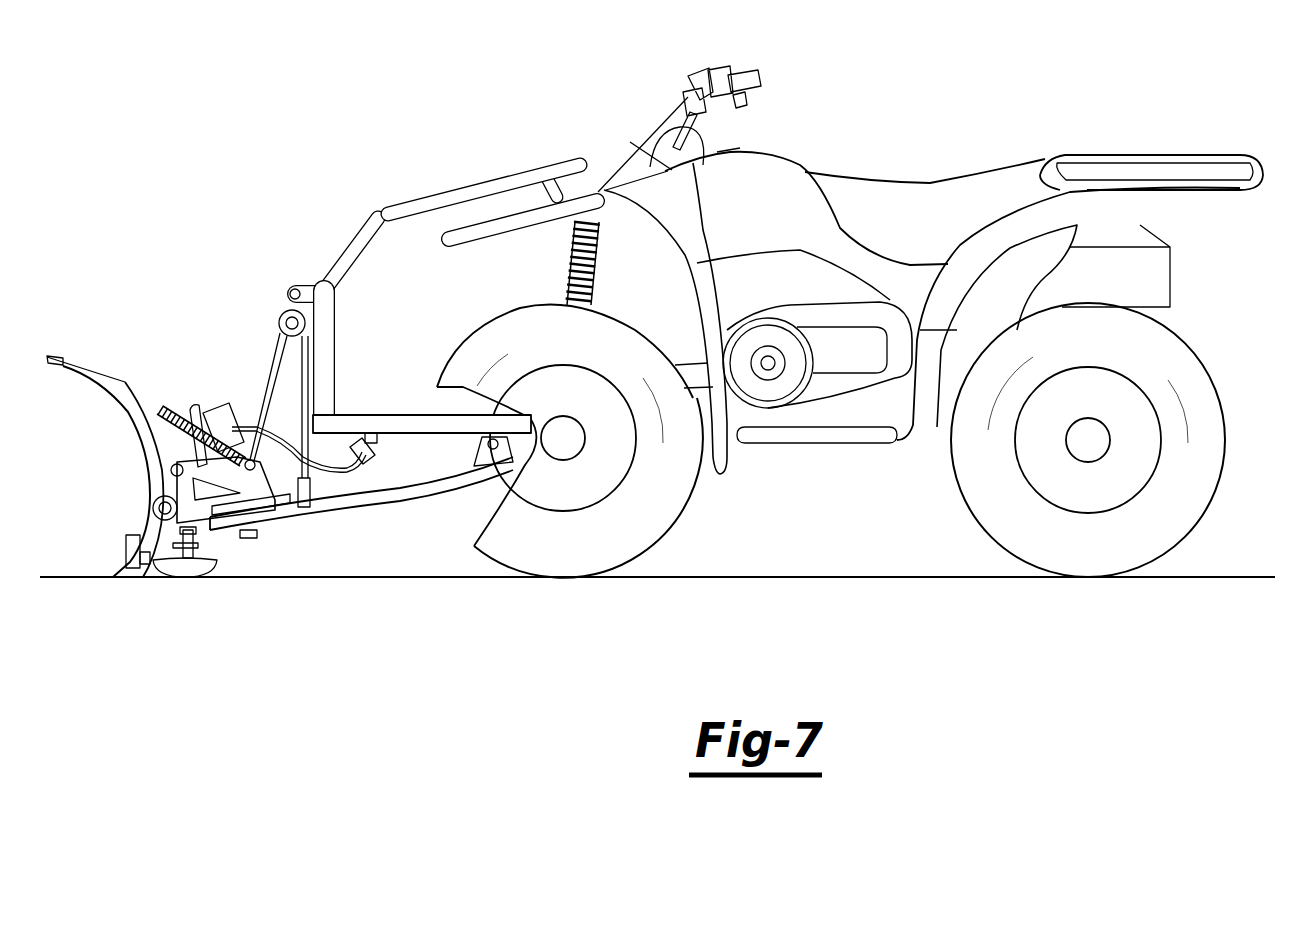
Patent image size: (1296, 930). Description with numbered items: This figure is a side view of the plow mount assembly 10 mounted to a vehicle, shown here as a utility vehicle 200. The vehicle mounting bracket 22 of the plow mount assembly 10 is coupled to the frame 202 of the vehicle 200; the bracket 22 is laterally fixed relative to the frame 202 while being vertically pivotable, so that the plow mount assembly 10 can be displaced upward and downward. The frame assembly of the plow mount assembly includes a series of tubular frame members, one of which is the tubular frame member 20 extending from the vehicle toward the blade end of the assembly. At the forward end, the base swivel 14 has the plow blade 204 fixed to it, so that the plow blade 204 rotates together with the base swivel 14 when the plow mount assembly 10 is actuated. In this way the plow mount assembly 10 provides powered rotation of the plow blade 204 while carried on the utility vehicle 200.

The plow mount assembly 10 is at (317, 529).
The base swivel 14 is at (255, 497).
The tubular frame member 20 is at (365, 506).
The vehicle mounting bracket 22 is at (493, 447).
The utility vehicle 200 is at (981, 92).
The frame 202 is at (382, 417).
The plow blade 204 is at (88, 367).